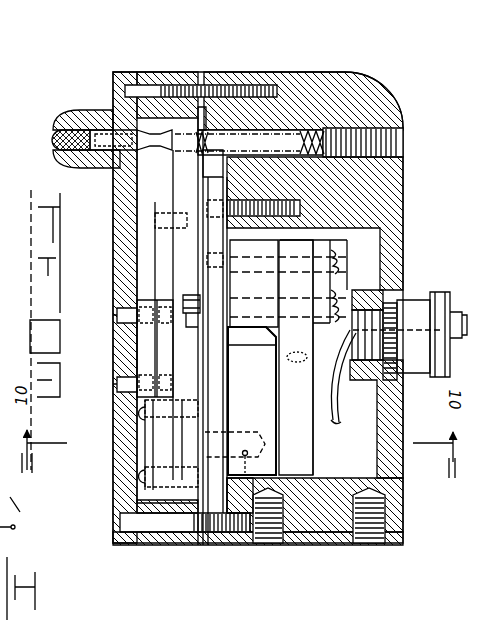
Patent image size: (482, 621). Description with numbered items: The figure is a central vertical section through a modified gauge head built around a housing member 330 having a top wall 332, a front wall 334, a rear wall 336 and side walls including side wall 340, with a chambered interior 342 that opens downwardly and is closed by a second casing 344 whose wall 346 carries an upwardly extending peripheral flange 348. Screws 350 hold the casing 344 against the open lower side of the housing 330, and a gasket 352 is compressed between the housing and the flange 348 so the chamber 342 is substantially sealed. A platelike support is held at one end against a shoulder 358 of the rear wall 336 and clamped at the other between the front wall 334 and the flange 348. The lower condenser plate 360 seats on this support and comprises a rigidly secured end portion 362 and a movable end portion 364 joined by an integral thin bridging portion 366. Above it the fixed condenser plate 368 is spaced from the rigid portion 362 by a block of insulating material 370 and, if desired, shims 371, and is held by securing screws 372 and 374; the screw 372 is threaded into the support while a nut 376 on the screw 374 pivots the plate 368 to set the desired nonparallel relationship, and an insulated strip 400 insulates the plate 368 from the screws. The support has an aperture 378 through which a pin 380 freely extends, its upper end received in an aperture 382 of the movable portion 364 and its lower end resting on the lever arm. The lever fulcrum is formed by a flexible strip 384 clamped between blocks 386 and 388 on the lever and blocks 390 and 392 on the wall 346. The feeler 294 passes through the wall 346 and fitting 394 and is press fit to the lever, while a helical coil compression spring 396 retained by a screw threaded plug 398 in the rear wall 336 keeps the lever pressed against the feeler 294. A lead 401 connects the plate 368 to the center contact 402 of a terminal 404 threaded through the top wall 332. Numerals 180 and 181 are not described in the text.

The cavity 180 is at (200, 172).
The guide plate 181 is at (175, 300).
The feeler 294 is at (50, 138).
The housing member 330 is at (408, 507).
The top wall 332 is at (407, 355).
The front wall 334 is at (334, 538).
The rear wall 336 is at (296, 76).
The side wall 340 is at (287, 613).
The chambered interior 342 is at (343, 403).
The second casing 344 is at (110, 447).
The wall 346 is at (112, 350).
The peripheral flange 348 is at (184, 547).
The screws 350 is at (112, 82).
The gasket 352 is at (206, 547).
The shoulder 358 is at (263, 188).
The lower condenser plate 360 is at (223, 362).
The rigidly secured end portion 362 is at (232, 252).
The movable end portion 364 is at (252, 401).
The bridging portion 366 is at (252, 353).
The fixed condenser plate 368 is at (296, 357).
The block of insulating material 370 is at (250, 243).
The shims 371 is at (288, 288).
The securing screw 372 is at (357, 293).
The securing screw 374 is at (316, 357).
The nut 376 is at (182, 315).
The aperture 378 is at (214, 432).
The pin 380 is at (204, 399).
The aperture 382 is at (240, 495).
The flexible strip 384 is at (147, 620).
The block 386 is at (171, 504).
The block 388 is at (123, 415).
The block 390 is at (153, 300).
The block 392 is at (154, 326).
The fitting 394 is at (92, 172).
The helical coil compression spring 396 is at (315, 223).
The screw threaded plug 398 is at (303, 142).
The insulated strip 400 is at (338, 348).
The lead 401 is at (312, 392).
The center contact 402 is at (458, 330).
The terminal 404 is at (424, 300).